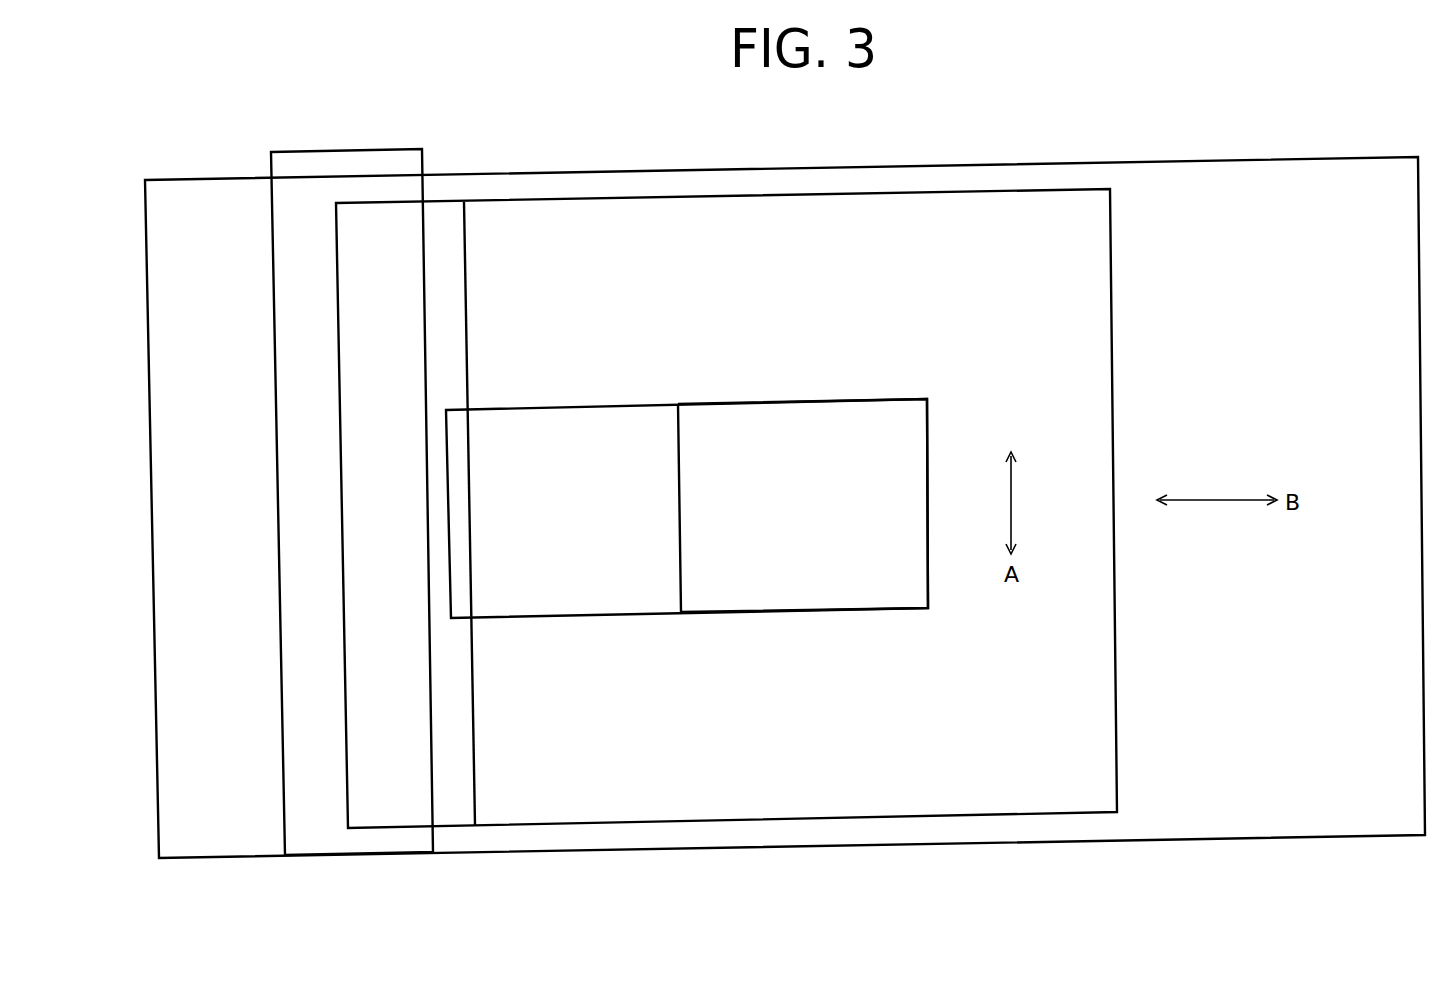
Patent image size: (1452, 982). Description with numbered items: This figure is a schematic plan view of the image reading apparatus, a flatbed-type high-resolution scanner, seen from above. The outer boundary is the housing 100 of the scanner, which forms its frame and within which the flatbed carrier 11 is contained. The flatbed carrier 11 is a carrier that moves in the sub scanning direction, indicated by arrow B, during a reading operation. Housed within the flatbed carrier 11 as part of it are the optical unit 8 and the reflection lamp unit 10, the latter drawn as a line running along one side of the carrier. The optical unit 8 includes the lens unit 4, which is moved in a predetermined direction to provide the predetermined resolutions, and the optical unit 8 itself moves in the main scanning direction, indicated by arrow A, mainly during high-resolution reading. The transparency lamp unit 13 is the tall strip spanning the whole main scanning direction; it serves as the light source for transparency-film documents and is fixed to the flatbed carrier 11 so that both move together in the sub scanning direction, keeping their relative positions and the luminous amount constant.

The housing 100 is at (158, 762).
The transparency lamp unit 13 is at (423, 162).
The flatbed carrier 11 is at (1112, 238).
The reflection lamp unit 10 is at (466, 262).
The lens unit 4 is at (609, 404).
The optical unit 8 is at (866, 400).